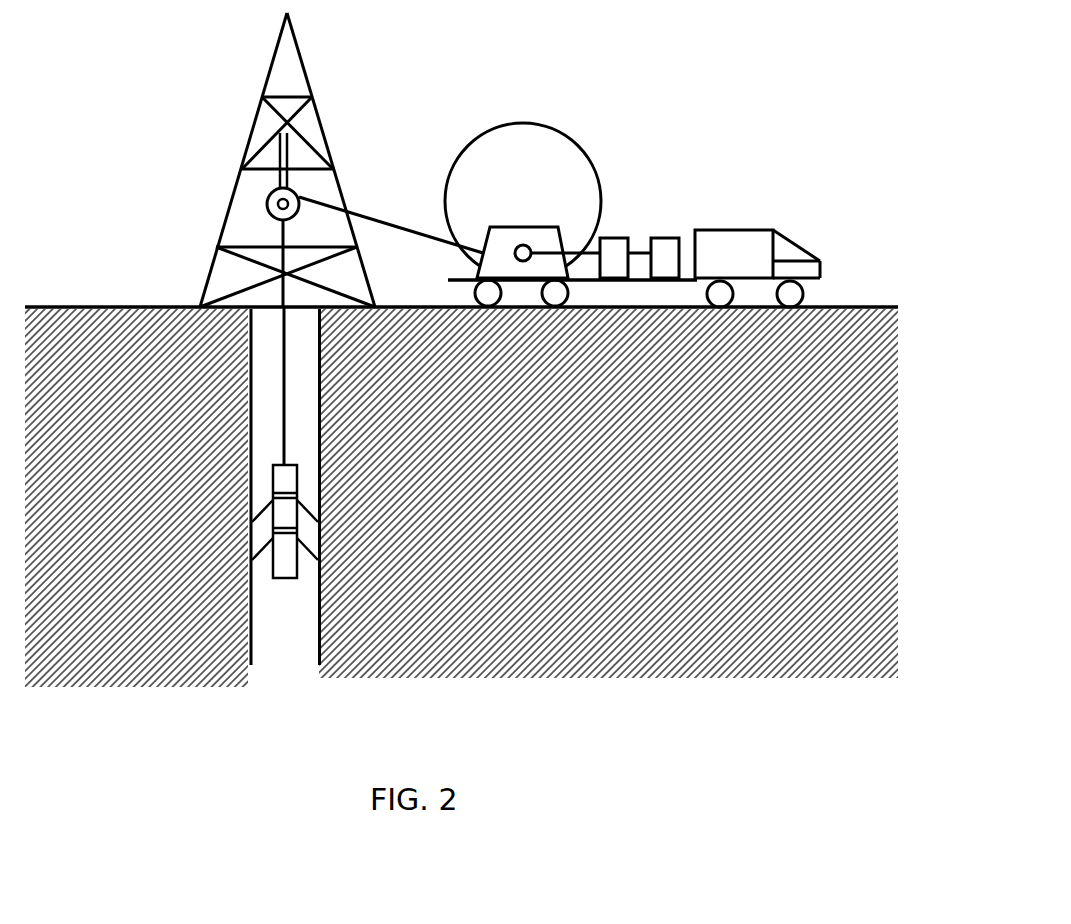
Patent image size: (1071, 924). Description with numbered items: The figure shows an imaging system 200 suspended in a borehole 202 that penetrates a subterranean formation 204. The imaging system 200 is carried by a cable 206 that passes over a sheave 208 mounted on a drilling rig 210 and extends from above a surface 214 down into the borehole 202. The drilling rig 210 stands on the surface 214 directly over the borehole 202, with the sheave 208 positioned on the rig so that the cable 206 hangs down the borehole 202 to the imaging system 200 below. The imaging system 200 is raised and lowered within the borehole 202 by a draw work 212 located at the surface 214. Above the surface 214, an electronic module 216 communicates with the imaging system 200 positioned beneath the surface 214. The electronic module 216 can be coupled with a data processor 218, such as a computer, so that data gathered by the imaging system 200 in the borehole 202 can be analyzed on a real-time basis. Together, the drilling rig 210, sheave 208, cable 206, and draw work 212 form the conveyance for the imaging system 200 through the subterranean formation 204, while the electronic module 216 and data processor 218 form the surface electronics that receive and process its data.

The imaging system 200 is at (297, 480).
The borehole 202 is at (293, 437).
The subterranean formation 204 is at (461, 498).
The cable 206 is at (287, 387).
The sheave 208 is at (267, 196).
The drilling rig 210 is at (252, 113).
The draw work 212 is at (541, 123).
The surface 214 is at (147, 306).
The electronic module 216 is at (612, 238).
The data processor 218 is at (671, 238).